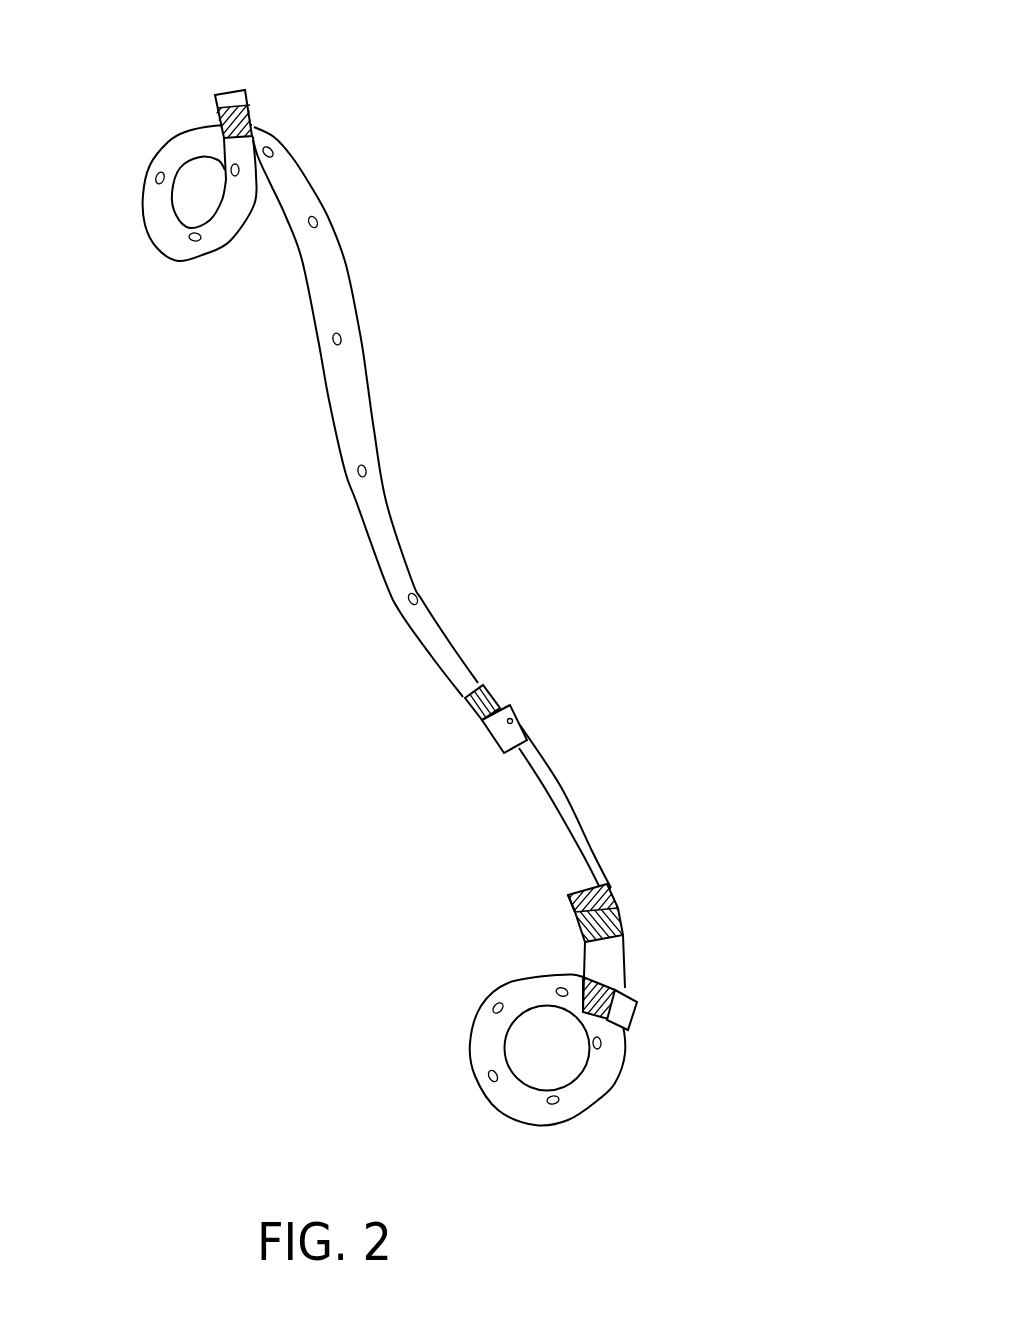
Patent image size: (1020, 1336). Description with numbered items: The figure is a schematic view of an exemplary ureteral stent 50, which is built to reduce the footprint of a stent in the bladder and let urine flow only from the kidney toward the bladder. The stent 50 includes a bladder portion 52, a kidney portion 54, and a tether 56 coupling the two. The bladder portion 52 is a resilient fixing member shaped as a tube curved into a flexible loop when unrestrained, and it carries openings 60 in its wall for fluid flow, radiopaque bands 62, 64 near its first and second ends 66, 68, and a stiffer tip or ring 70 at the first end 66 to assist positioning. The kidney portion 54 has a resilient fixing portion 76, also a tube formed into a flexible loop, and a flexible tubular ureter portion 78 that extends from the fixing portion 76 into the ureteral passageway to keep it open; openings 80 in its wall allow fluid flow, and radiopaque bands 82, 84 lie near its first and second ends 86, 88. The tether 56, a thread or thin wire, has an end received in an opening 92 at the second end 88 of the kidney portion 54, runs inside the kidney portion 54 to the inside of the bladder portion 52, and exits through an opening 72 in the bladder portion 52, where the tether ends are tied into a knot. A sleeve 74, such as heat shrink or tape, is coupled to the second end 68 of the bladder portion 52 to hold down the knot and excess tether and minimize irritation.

The ureteral stent 50 is at (596, 448).
The bladder portion 52 is at (618, 1095).
The kidney portion 54 is at (385, 337).
The tether 56 is at (566, 788).
The openings 60 is at (608, 960).
The radiopaque band 62 is at (581, 975).
The radiopaque band 64 is at (620, 912).
The first end 66 is at (626, 990).
The second end 68 is at (573, 910).
The tip or ring 70 is at (639, 1003).
The opening 72 is at (612, 890).
The sleeve 74 is at (575, 897).
The resilient fixing portion 76 is at (178, 140).
The ureter portion 78 is at (386, 498).
The openings 80 is at (316, 218).
The radiopaque band 82 is at (252, 117).
The radiopaque band 84 is at (470, 705).
The first end 86 is at (247, 90).
The second end 88 is at (511, 712).
The opening 92 is at (515, 721).